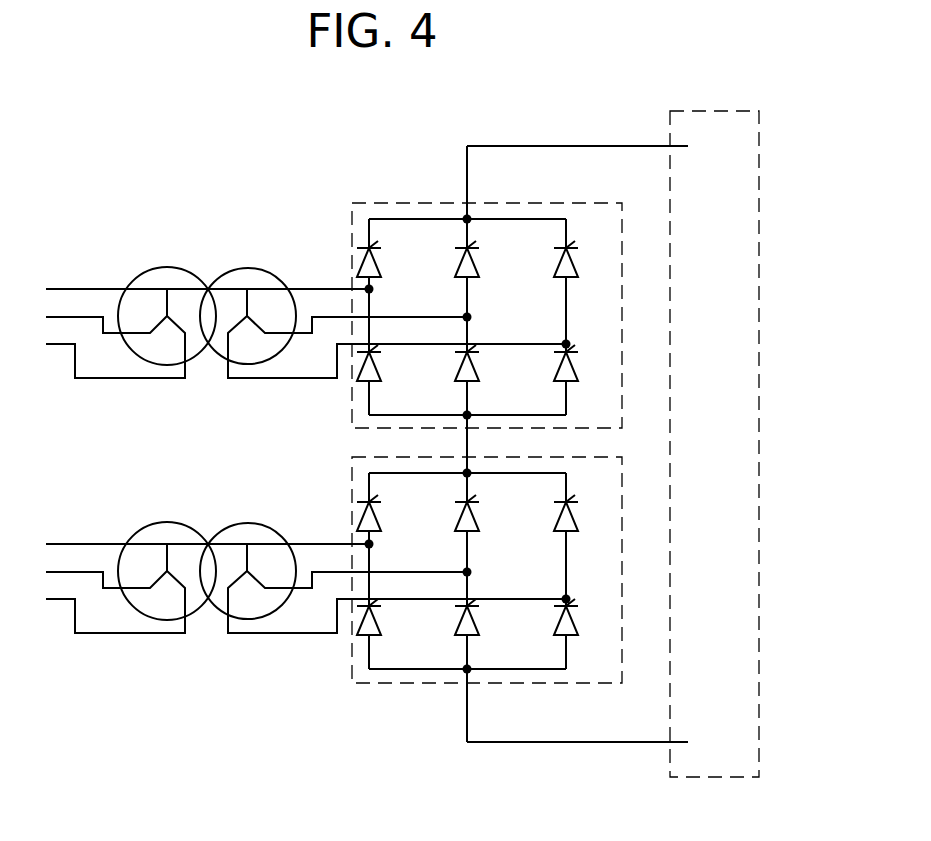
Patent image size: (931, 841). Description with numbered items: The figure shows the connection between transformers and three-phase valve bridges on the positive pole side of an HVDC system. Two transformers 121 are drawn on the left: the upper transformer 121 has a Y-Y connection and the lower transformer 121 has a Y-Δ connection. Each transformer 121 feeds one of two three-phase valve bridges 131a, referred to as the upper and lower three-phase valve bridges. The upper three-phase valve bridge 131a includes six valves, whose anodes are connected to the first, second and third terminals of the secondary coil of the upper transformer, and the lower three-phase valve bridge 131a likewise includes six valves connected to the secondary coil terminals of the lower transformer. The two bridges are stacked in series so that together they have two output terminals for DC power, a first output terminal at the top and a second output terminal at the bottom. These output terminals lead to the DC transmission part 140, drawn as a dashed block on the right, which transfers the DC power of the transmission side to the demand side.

The transformer 121 is at (167, 267).
The three-phase valve bridge 131a is at (379, 202).
The DC transmission part 140 is at (715, 111).